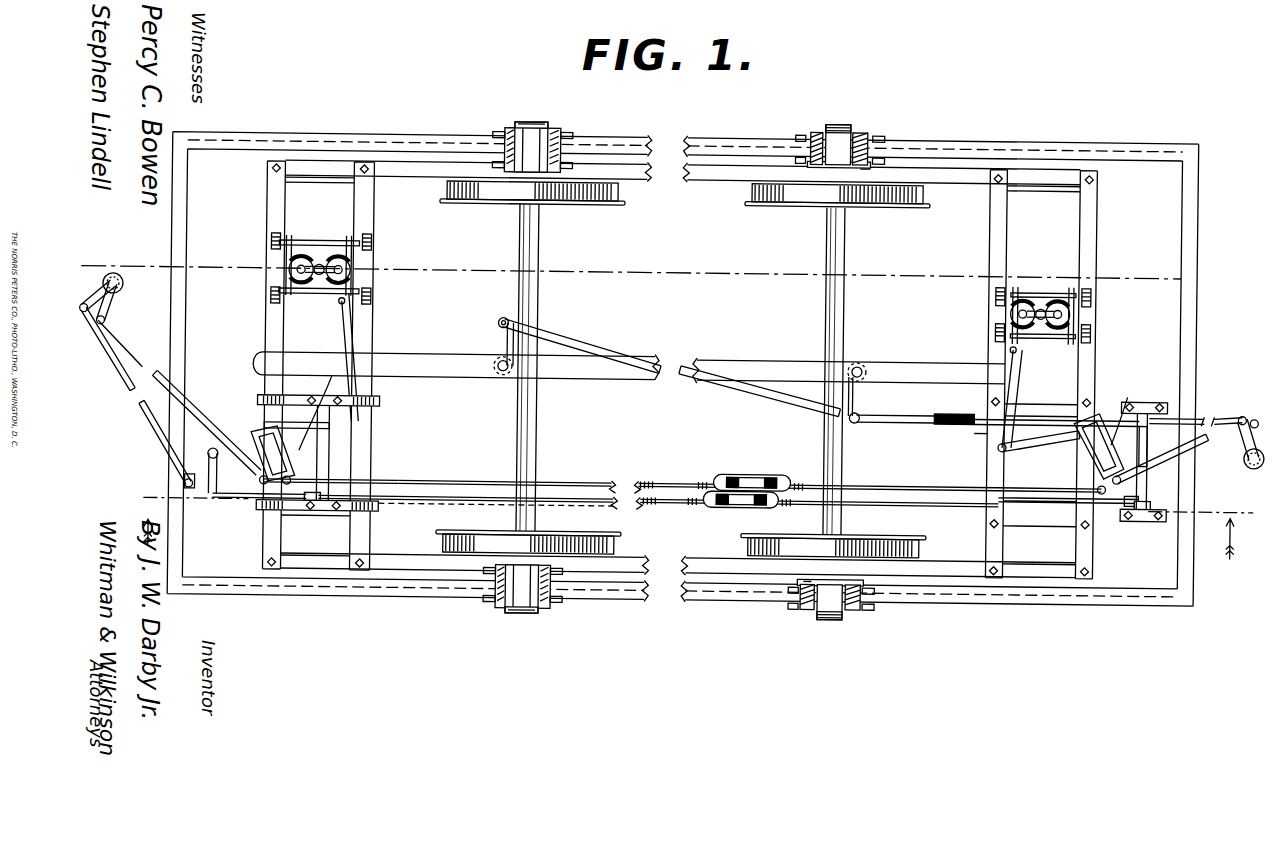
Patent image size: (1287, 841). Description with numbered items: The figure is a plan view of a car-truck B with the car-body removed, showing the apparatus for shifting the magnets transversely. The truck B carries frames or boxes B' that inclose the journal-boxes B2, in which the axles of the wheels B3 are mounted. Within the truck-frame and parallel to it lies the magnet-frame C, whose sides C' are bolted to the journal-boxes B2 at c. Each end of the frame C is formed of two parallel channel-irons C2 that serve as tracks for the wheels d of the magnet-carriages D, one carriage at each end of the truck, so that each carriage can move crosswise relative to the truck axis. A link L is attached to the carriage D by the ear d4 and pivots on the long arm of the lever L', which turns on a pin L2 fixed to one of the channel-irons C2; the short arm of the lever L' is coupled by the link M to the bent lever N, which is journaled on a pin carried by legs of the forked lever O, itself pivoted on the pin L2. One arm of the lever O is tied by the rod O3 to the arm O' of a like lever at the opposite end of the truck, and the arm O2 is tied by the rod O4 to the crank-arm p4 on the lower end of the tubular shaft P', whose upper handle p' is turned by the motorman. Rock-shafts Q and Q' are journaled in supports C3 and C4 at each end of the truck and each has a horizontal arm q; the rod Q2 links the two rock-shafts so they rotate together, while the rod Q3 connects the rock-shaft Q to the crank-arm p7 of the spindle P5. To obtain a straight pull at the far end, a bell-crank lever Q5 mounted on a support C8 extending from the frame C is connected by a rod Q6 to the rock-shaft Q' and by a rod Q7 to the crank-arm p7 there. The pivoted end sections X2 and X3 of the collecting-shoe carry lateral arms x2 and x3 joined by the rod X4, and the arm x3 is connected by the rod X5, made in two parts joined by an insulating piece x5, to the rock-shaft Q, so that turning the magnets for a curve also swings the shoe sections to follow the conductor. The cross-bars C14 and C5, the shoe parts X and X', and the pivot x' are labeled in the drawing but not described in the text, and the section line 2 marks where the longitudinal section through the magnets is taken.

The truck B is at (683, 373).
The frames or boxes B' is at (664, 368).
The journal-boxes B2 is at (525, 124).
The wheels B3 is at (799, 205).
The magnet-frame C is at (681, 370).
The sides of magnet-frame C' is at (680, 369).
The channel-irons C2 is at (364, 197).
The support C3 is at (1144, 398).
The support C4 is at (302, 516).
The upper cross bar C14 is at (382, 405).
The cross tie C5 is at (978, 432).
The support C8 is at (185, 468).
The magnet-carriage D is at (298, 268).
The wheels of magnet-carriage d is at (370, 300).
The ear d4 is at (338, 306).
The link L is at (724, 361).
The lever L' is at (652, 422).
The pin L2 is at (1098, 380).
The link M is at (208, 459).
The bent lever N is at (292, 435).
The forked lever O is at (699, 447).
The arm of lever O' is at (349, 466).
The arm of lever O2 is at (260, 483).
The rod O3 is at (465, 483).
The rod O4 is at (218, 420).
The tubular shaft P' is at (701, 366).
The spindle P5 is at (110, 280).
The crank-arm p4 is at (110, 318).
The crank-arm p7 is at (83, 309).
The handle p' is at (1268, 424).
The rock-shaft Q is at (1111, 499).
The rock-shaft Q' is at (358, 453).
The rod Q2 is at (615, 506).
The rod Q3 is at (1210, 413).
The bell-crank lever Q5 is at (214, 504).
The rod Q6 is at (252, 506).
The rod Q7 is at (148, 432).
The bar X is at (772, 356).
The diagonal bar X' is at (759, 373).
The end section of collecting-shoe X2 is at (925, 360).
The end section of collecting-shoe X3 is at (448, 352).
The rod X4 is at (601, 344).
The rod X5 is at (910, 418).
The pivot x' is at (677, 371).
The laterally-extending arm x2 is at (866, 404).
The laterally-extending arm x3 is at (497, 368).
The insulating piece x5 is at (942, 422).
The bolt connection c is at (858, 167).
The horizontal arm q is at (326, 377).
The section line 2 is at (698, 522).